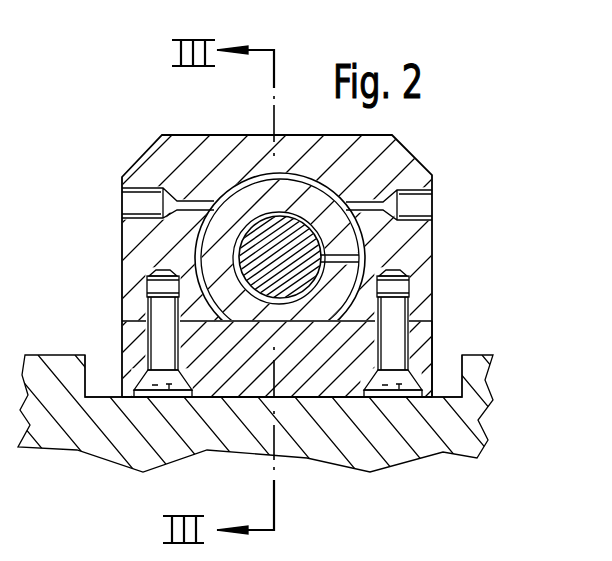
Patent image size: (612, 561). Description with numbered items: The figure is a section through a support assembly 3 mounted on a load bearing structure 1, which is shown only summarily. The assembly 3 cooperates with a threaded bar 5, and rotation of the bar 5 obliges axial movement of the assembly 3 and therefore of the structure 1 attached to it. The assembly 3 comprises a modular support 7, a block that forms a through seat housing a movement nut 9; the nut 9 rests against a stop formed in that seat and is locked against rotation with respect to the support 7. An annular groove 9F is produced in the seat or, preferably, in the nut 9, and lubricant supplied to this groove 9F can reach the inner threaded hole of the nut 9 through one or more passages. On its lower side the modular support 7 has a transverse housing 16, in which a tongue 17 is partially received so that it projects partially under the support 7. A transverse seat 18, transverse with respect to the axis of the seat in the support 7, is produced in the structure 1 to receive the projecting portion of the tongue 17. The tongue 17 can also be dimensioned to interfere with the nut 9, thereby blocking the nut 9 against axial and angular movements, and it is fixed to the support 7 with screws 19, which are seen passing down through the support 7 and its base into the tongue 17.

The load bearing structure 1 is at (57, 353).
The support assembly 3 is at (113, 234).
The threaded bar 5 is at (290, 205).
The modular support 7 is at (403, 162).
The movement nut 9 is at (340, 235).
The annular groove 9F is at (289, 240).
The transverse housing 16 is at (433, 340).
The tongue 17 is at (318, 383).
The transverse seat 18 is at (107, 366).
The screws 19 is at (160, 322).